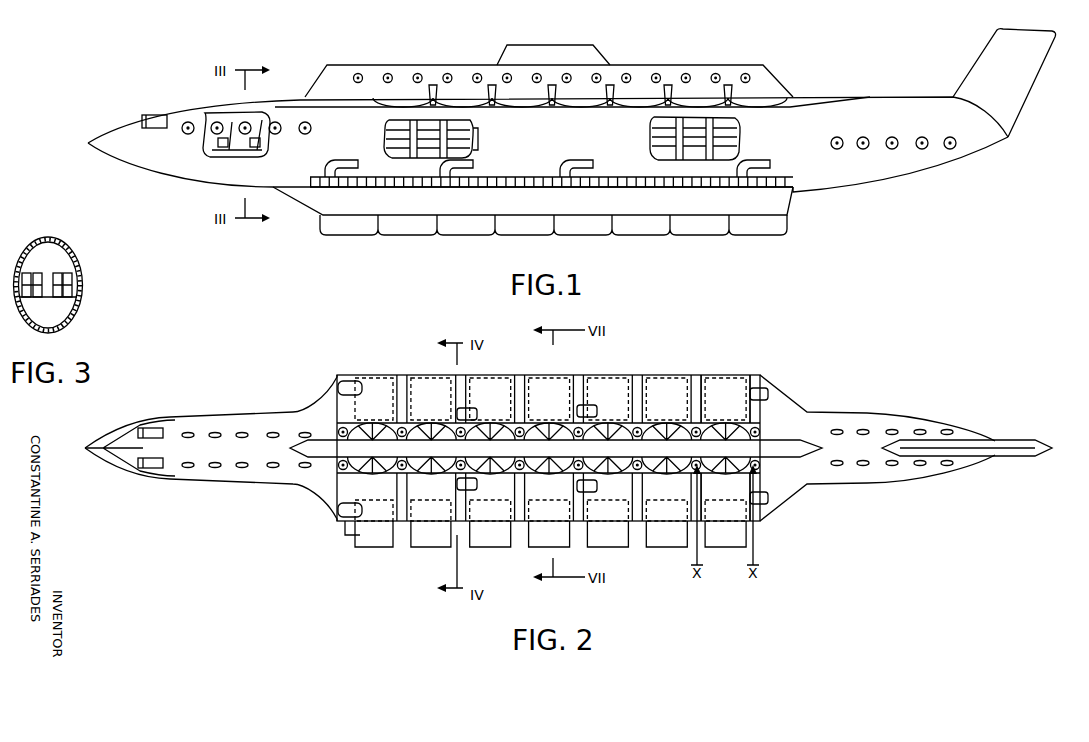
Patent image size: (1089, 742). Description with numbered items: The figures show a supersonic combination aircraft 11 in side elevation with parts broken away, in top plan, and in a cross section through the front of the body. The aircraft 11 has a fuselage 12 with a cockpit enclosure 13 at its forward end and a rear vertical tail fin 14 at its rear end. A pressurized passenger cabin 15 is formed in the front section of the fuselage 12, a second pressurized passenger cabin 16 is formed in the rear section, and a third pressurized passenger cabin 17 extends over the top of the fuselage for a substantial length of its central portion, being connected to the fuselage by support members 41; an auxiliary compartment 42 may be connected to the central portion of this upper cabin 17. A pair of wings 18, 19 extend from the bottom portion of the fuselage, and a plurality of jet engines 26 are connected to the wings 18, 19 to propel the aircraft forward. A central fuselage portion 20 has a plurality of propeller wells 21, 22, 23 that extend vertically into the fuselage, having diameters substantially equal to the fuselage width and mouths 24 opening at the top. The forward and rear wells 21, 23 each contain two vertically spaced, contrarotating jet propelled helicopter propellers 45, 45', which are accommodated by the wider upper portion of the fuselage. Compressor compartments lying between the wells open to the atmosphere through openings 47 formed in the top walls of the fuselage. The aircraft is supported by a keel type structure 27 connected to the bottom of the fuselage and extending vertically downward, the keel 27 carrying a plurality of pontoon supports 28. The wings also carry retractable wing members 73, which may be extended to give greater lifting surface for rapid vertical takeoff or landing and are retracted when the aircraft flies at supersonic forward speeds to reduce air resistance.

In FIG. 1, the combination aircraft 11 is at (866, 78).
In FIG. 1, the fuselage 12 is at (881, 192).
In FIG. 1, the cockpit enclosure 13 is at (150, 113).
In FIG. 2, the cockpit enclosure 13 is at (137, 473).
In FIG. 1, the rear vertical tail fin 14 is at (1006, 92).
In FIG. 2, the rear vertical tail fin 14 is at (1000, 440).
In FIG. 1, the pressurized passenger cabin 15 is at (222, 117).
In FIG. 3, the pressurized passenger cabin 15 is at (70, 248).
In FIG. 2, the pressurized passenger cabin 15 is at (207, 420).
In FIG. 1, the pressurized passenger cabin 16 is at (897, 147).
In FIG. 2, the pressurized passenger cabin 16 is at (905, 417).
In FIG. 1, the pressurized passenger cabin 17 is at (665, 73).
In FIG. 2, the pressurized passenger cabin 17 is at (477, 448).
In FIG. 2, the wing 18 is at (748, 376).
In FIG. 2, the wing 19 is at (768, 512).
In FIG. 1, the central fuselage portion 20 is at (515, 160).
In FIG. 2, the propeller well 21 is at (395, 422).
In FIG. 2, the propeller well 22 is at (565, 420).
In FIG. 2, the propeller well 23 is at (717, 425).
In FIG. 2, the mouths 24 is at (427, 420).
In FIG. 1, the jet engines 26 is at (343, 180).
In FIG. 2, the jet engines 26 is at (355, 523).
In FIG. 1, the keel type structure 27 is at (792, 200).
In FIG. 1, the pontoon supports 28 is at (530, 222).
In FIG. 1, the support members 41 is at (378, 85).
In FIG. 2, the support members 41 is at (352, 428).
In FIG. 1, the auxiliary compartment 42 is at (593, 55).
In FIG. 1, the propeller 45 is at (583, 93).
In FIG. 1, the propeller 45' is at (614, 160).
In FIG. 2, the openings 47 is at (340, 430).
In FIG. 2, the retractable wing members 73 is at (683, 395).